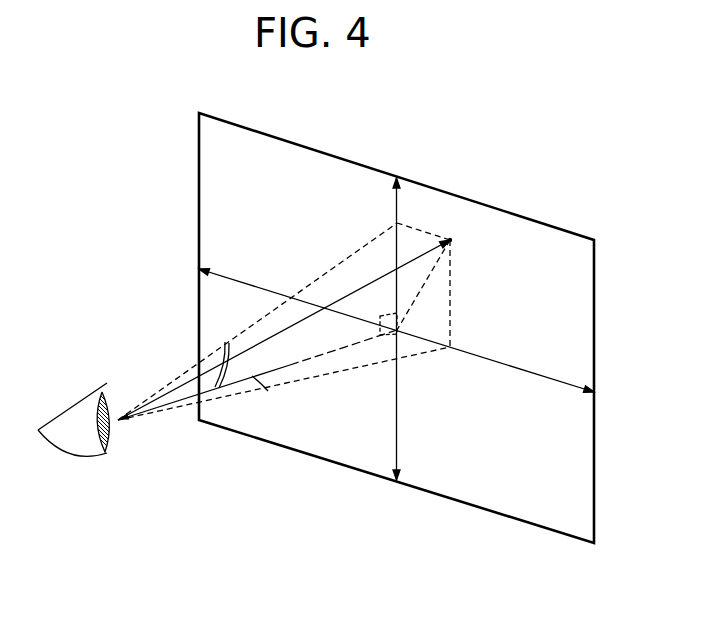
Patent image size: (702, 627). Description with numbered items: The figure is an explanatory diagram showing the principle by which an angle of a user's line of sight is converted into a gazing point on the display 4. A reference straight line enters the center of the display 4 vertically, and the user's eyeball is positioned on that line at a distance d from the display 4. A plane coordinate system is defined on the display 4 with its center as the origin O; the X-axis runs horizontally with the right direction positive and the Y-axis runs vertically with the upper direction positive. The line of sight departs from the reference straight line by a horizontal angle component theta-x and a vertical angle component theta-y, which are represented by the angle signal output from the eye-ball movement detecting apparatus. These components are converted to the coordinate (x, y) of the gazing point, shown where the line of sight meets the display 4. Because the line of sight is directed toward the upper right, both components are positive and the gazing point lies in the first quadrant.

The display 4 is at (570, 305).
The x-component of gazing point coordinate x is at (396, 344).
The y-component of gazing point coordinate y is at (388, 329).
The origin O is at (448, 348).